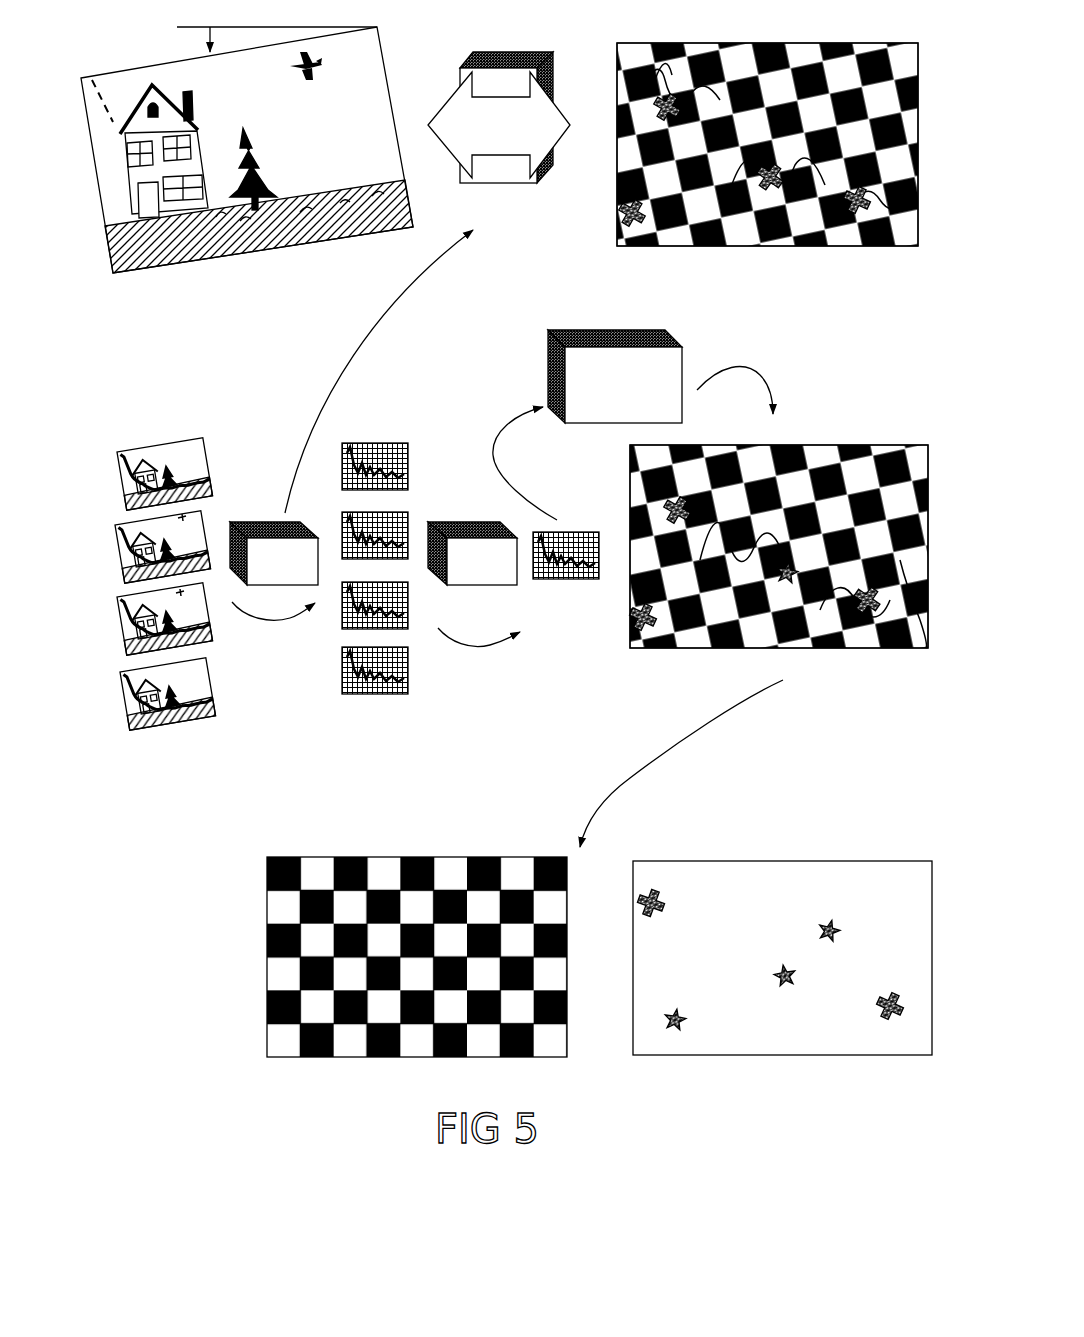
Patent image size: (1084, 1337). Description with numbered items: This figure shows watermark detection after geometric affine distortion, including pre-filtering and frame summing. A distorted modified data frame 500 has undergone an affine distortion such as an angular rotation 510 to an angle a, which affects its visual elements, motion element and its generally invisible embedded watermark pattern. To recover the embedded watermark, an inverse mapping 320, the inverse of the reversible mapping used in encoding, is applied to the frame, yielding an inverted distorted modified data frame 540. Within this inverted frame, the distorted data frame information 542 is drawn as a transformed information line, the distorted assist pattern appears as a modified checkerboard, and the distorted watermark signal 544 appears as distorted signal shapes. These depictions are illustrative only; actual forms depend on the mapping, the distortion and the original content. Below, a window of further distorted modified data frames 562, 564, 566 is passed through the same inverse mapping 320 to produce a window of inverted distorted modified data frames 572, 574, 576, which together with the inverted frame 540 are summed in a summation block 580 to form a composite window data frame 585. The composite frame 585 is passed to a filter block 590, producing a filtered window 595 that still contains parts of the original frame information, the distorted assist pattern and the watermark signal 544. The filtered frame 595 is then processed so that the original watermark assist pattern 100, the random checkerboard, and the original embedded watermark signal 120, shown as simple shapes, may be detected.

The watermark assist pattern 100 is at (330, 1057).
The watermark signal 120 is at (728, 1055).
The inverse mapping 320 is at (490, 49).
The distorted modified data frame 500 is at (162, 270).
The angular rotation 510 is at (210, 44).
The inverted distorted modified data frame 540 is at (735, 43).
The distorted data frame information 542 is at (668, 72).
The distorted watermark signal 544 is at (617, 213).
The distorted modified data frame 562 is at (143, 547).
The distorted modified data frame 564 is at (145, 619).
The distorted modified data frame 566 is at (146, 694).
The inverted distorted modified data frame 572 is at (378, 512).
The inverted distorted modified data frame 574 is at (342, 617).
The inverted distorted modified data frame 576 is at (342, 693).
The summation module 580 is at (472, 584).
The composite window data frame 585 is at (578, 581).
The filter module 590 is at (548, 353).
The filtered window 595 is at (704, 648).